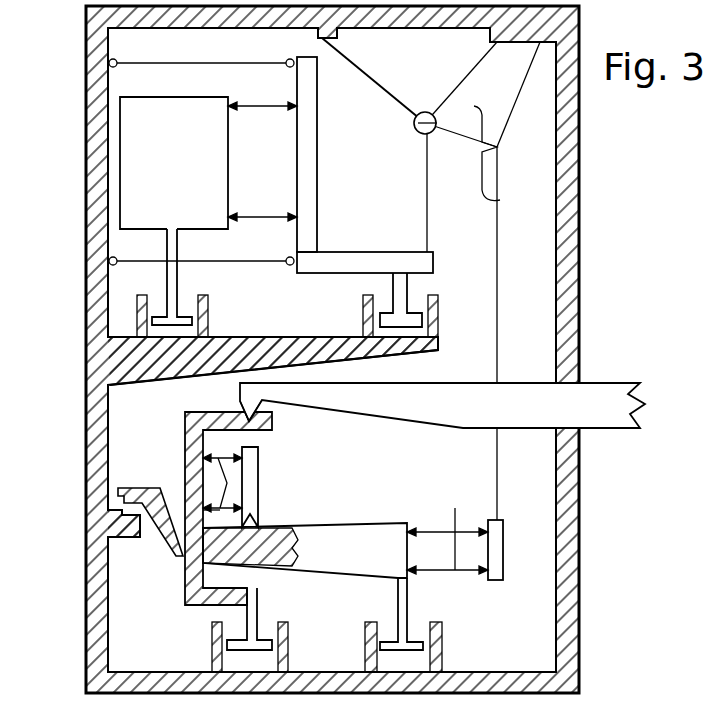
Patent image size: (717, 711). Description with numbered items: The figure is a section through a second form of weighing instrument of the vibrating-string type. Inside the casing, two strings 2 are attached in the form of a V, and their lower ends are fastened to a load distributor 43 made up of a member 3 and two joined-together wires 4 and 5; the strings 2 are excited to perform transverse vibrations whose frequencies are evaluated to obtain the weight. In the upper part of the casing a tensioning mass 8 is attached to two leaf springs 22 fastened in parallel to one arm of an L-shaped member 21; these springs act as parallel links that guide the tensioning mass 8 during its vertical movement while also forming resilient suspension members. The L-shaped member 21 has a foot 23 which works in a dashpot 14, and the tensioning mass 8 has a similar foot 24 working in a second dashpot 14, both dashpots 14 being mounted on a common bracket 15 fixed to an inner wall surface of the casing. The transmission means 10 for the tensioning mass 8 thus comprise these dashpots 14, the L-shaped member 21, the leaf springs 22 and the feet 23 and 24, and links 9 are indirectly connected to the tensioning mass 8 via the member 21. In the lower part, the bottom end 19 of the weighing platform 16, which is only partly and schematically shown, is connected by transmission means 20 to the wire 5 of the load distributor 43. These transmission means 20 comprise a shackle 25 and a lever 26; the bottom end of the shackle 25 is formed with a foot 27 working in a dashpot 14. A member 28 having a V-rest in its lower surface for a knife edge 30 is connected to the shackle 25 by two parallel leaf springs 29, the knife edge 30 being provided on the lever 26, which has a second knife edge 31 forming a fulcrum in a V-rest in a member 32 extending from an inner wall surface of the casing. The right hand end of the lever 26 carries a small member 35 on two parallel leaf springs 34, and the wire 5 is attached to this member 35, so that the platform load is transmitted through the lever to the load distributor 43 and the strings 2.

The strings 2 is at (467, 80).
The member 3 is at (437, 123).
The wire 4 is at (459, 137).
The wire 5 is at (478, 153).
The tensioning mass 8 is at (130, 190).
The links 9 is at (182, 65).
The transmission means 10 is at (337, 222).
The dashpot 14 is at (145, 312).
The bracket 15 is at (115, 367).
The weighing platform 16 is at (603, 393).
The bottom end 19 is at (243, 394).
The transmission means 20 is at (322, 504).
The L-shaped member 21 is at (307, 127).
The leaf springs 22 is at (267, 216).
The foot 23 is at (440, 313).
The foot 24 is at (172, 282).
The shackle 25 is at (192, 485).
The lever 26 is at (318, 560).
The foot 27 is at (230, 635).
The member 28 is at (250, 453).
The leaf springs 29 is at (229, 484).
The knife edge 30 is at (248, 527).
The knife edge 31 is at (128, 498).
The member 32 is at (120, 528).
The leaf springs 34 is at (435, 527).
The small member 35 is at (407, 602).
The load distributor 43 is at (497, 147).